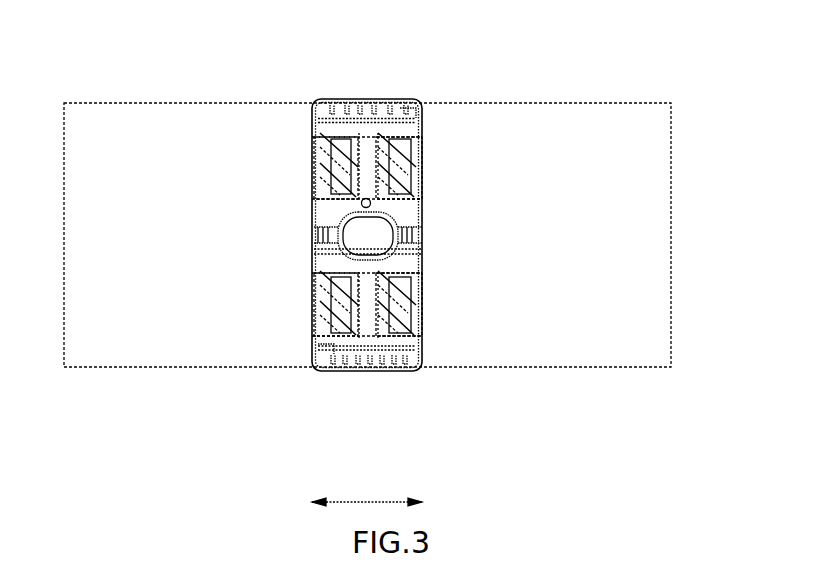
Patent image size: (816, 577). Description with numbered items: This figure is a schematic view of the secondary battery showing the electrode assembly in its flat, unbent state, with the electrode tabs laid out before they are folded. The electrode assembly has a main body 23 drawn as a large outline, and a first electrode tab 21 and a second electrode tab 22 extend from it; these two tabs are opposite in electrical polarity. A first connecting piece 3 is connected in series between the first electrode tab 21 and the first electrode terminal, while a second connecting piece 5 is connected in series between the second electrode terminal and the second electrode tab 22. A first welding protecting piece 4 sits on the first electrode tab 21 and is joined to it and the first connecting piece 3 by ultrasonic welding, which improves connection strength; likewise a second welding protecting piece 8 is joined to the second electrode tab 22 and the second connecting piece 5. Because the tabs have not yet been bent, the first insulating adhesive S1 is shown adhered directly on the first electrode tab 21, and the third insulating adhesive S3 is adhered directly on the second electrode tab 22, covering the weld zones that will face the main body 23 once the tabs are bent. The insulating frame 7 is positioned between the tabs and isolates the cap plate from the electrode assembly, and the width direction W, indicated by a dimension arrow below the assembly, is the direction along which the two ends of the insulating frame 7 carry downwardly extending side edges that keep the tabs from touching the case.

The first connecting piece 3 is at (372, 150).
The first welding protecting piece 4 is at (320, 134).
The second connecting piece 5 is at (368, 342).
The insulating frame 7 is at (410, 256).
The second welding protecting piece 8 is at (320, 272).
The first electrode tab 21 is at (320, 159).
The second electrode tab 22 is at (320, 307).
The main body 23 is at (125, 118).
The first insulating adhesive S1 is at (412, 135).
The third insulating adhesive S3 is at (342, 338).
The width direction W is at (367, 486).